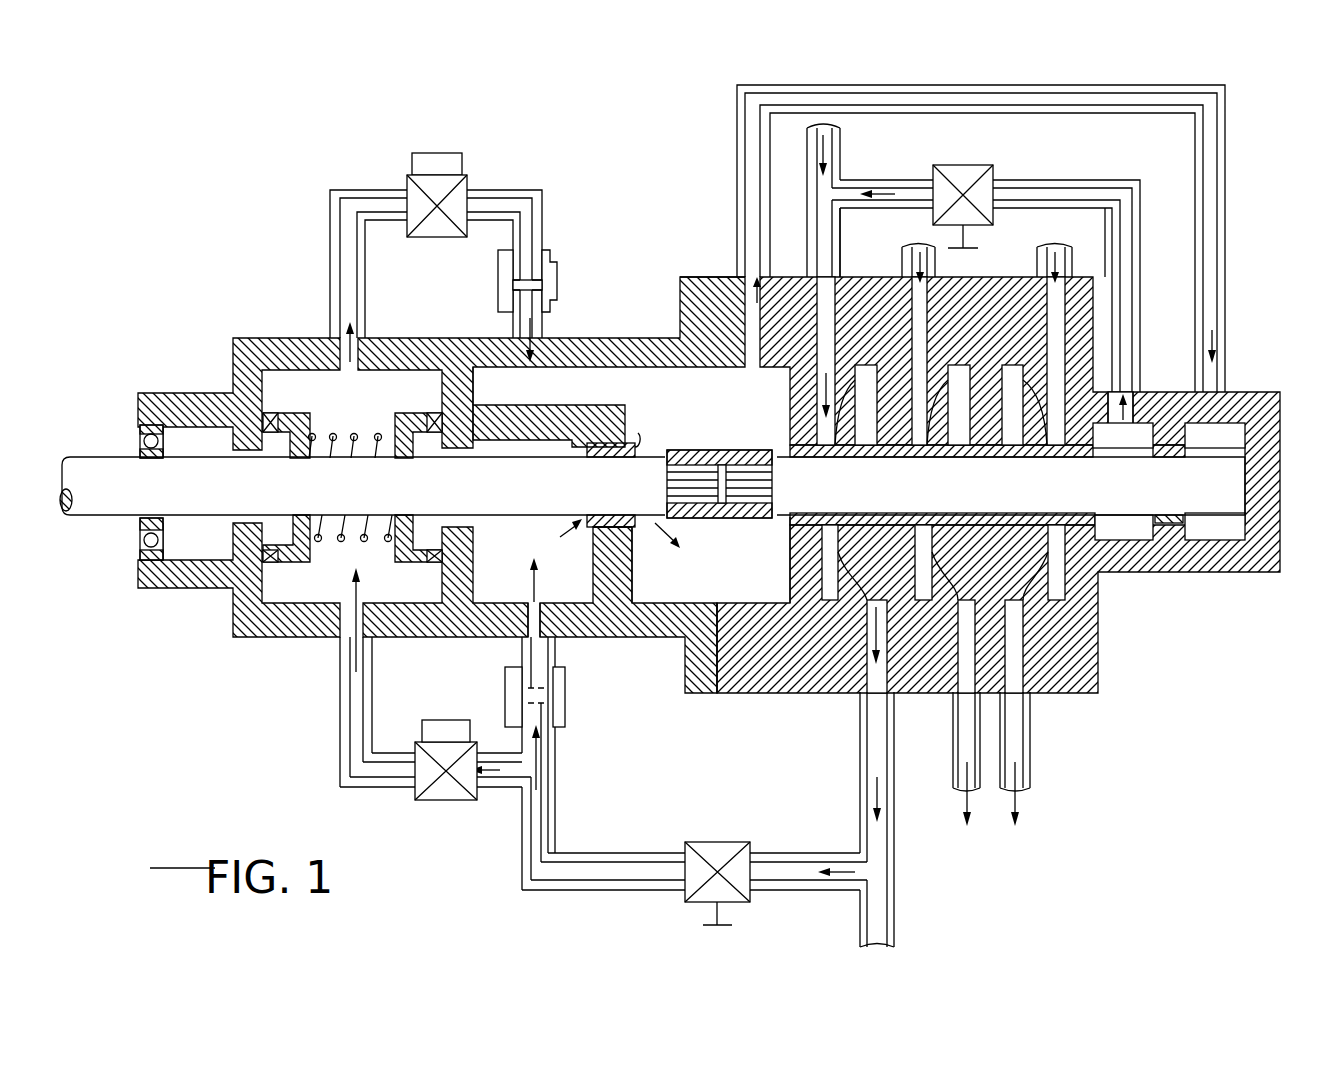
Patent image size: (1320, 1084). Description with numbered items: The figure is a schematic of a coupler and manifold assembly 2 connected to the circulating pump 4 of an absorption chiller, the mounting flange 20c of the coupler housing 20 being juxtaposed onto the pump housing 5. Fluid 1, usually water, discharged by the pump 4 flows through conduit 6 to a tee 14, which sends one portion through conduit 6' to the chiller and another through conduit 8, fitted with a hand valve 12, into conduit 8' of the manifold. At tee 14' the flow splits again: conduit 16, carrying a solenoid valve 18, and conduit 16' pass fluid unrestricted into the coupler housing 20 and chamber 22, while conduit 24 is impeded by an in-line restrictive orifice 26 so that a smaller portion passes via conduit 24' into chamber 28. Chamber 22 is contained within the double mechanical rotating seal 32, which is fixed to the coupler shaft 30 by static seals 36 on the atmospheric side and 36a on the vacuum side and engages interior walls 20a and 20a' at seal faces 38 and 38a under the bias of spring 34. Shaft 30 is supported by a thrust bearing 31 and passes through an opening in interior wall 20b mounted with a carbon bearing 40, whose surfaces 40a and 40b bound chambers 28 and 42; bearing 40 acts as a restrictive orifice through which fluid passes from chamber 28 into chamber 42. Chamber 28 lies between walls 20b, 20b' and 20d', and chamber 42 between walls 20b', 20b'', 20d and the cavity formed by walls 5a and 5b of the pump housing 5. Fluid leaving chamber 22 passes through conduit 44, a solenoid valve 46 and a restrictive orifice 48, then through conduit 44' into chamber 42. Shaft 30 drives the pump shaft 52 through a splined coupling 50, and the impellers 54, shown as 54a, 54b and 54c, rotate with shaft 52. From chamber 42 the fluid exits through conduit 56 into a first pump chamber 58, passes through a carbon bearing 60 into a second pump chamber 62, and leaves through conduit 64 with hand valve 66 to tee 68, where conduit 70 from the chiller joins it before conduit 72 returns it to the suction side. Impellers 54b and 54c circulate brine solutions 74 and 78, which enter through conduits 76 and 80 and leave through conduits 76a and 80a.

The fluid 1 is at (757, 345).
The coupler and manifold assembly 2 is at (362, 792).
The circulating pump 4 is at (1115, 750).
The pump housing 5 is at (1275, 392).
The wall 5a is at (790, 560).
The wall 5b is at (705, 608).
The conduit 6 is at (845, 773).
The conduit 6' is at (912, 923).
The conduit 8 is at (671, 890).
The conduit 8' is at (580, 763).
The hand valve 12 is at (715, 842).
The tee 14 is at (848, 875).
The tee 14' is at (587, 775).
The conduit 16 is at (435, 805).
The conduit 16' is at (317, 677).
The solenoid valve 18 is at (445, 800).
The coupler housing 20 is at (425, 330).
The interior wall 20a is at (301, 391).
The interior wall 20a' is at (400, 391).
The interior wall 20b is at (590, 547).
The wall 20b' is at (504, 386).
The wall 20b'' is at (665, 565).
The mounting flange 20c is at (680, 283).
The wall 20d is at (753, 560).
The wall 20d' is at (560, 597).
The chamber 22 is at (365, 424).
The conduit 24 is at (581, 695).
The conduit 24' is at (586, 652).
The in-line restrictive orifice 26 is at (567, 697).
The chamber 28 is at (530, 455).
The coupler shaft 30 is at (88, 460).
The thrust bearing 31 is at (142, 520).
The double mechanical rotating seal 32 is at (286, 445).
The spring 34 is at (330, 455).
The static seal 36 is at (292, 460).
The static seal 36a is at (405, 460).
The seal face 38 is at (275, 562).
The rotating seal 38a is at (432, 565).
The carbon bearing 40 is at (625, 420).
The surface 40a is at (590, 440).
The surface 40b is at (635, 455).
The chamber 42 is at (710, 406).
The conduit 44 is at (390, 276).
The conduit 44' is at (559, 294).
The solenoid valve 46 is at (462, 163).
The restrictive orifice 48 is at (556, 278).
The splined coupling 50 is at (728, 450).
The pump shaft 52 is at (970, 496).
The impeller 54 is at (942, 482).
The impeller 54a is at (858, 455).
The impeller 54b is at (960, 385).
The impeller 54c is at (1030, 550).
The conduit 56 is at (737, 176).
The first pump chamber 58 is at (1225, 440).
The carbon bearing 60 is at (1168, 525).
The second pump chamber 62 is at (1110, 440).
The conduit 64 is at (1142, 335).
The hand valve 66 is at (978, 165).
The tee 68 is at (806, 210).
The conduit 70 is at (868, 180).
The conduit 72 is at (842, 268).
The brine solution 74 is at (910, 238).
The conduit 76 is at (940, 262).
The conduit 76a is at (950, 765).
The brine solution 78 is at (1048, 228).
The conduit 80 is at (1100, 258).
The conduit 80a is at (1032, 740).